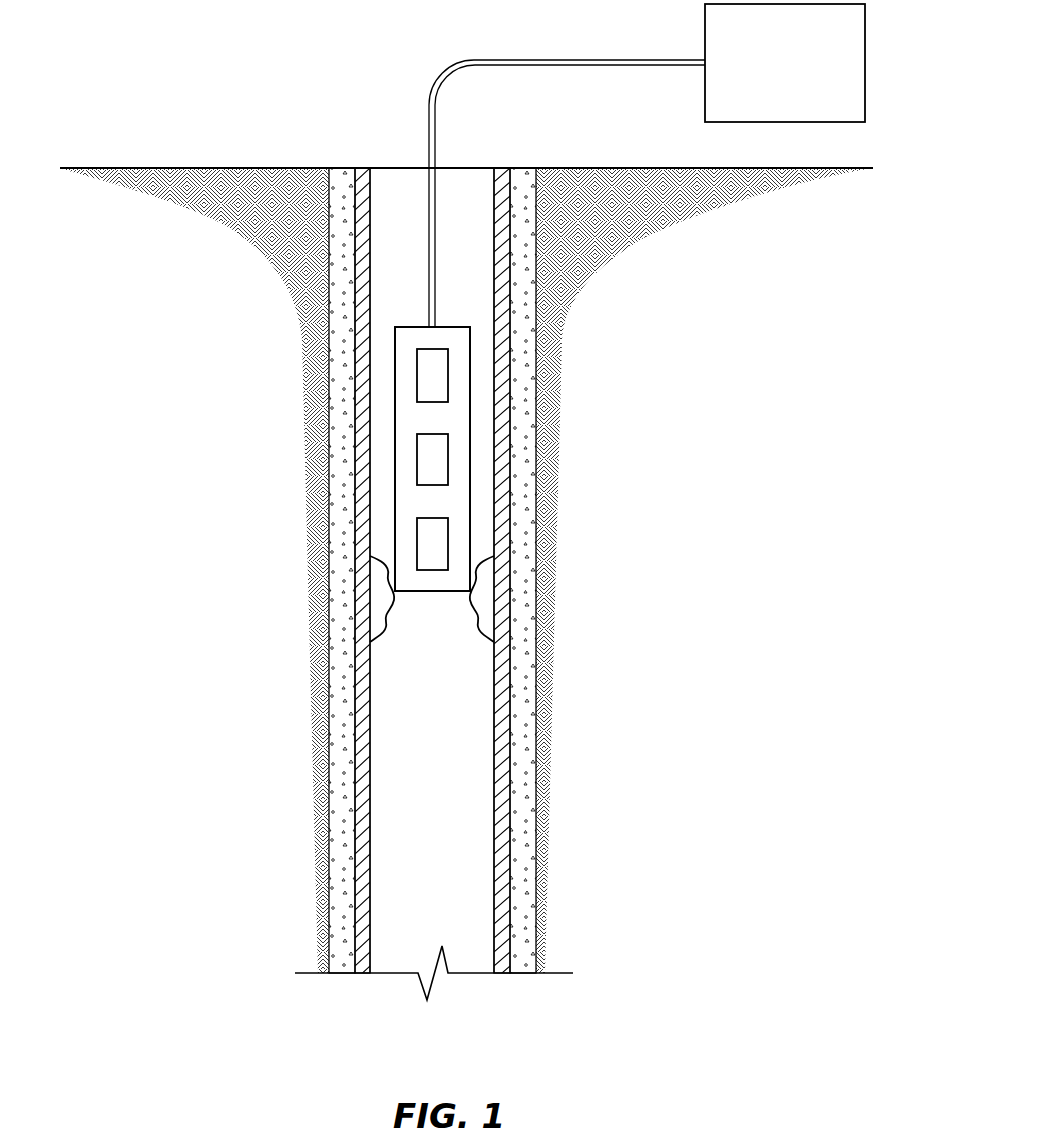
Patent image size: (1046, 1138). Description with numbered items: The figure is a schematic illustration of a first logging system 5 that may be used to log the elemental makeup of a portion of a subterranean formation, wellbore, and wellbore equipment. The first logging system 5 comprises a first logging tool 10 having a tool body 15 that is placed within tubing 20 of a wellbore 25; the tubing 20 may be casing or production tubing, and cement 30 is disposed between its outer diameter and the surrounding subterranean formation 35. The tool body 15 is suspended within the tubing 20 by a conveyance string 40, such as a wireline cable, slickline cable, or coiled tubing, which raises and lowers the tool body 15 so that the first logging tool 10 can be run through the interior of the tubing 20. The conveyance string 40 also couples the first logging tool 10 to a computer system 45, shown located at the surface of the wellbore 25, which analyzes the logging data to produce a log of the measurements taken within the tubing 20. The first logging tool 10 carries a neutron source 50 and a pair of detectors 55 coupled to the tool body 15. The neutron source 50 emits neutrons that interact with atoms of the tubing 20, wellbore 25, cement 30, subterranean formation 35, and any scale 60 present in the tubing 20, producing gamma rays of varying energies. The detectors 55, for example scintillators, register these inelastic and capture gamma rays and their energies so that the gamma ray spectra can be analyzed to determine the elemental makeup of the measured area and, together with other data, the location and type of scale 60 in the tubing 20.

The first logging system 5 is at (377, 142).
The first logging tool 10 is at (395, 348).
The tool body 15 is at (403, 372).
The tubing 20 is at (362, 447).
The wellbore 25 is at (466, 318).
The cement 30 is at (341, 493).
The subterranean formation 35 is at (609, 220).
The conveyance string 40 is at (437, 123).
The computer system 45 is at (865, 62).
The neutron source 50 is at (447, 372).
The detectors 55 is at (447, 460).
The scale 60 is at (375, 594).